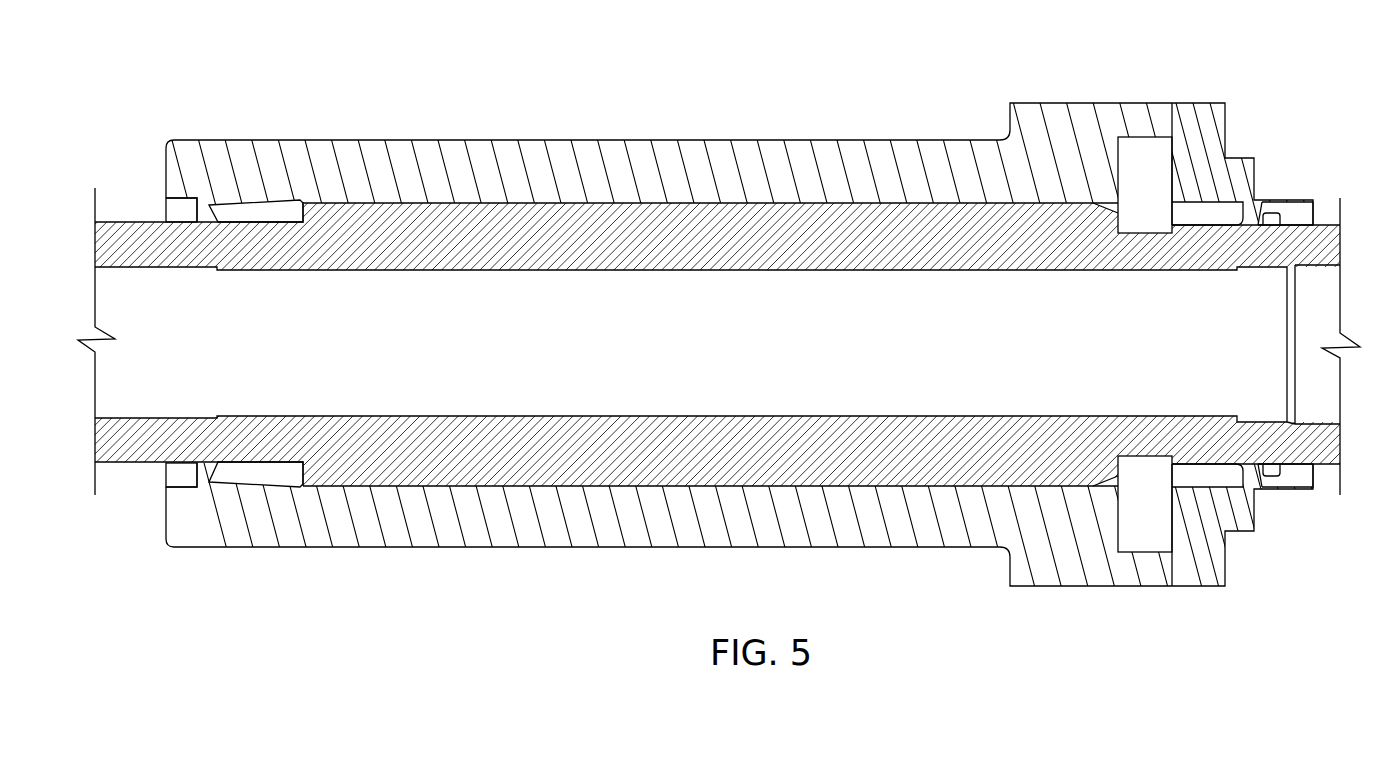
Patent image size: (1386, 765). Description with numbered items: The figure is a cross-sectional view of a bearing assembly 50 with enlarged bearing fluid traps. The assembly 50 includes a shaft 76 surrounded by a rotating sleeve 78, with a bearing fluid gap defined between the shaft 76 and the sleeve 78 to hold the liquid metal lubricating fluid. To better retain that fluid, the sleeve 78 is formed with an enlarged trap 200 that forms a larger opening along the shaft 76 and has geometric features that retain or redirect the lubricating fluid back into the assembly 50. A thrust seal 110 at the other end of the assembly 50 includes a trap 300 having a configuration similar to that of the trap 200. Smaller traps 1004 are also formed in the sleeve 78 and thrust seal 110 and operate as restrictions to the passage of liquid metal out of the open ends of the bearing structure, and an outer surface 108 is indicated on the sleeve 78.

The bearing assembly 50 is at (495, 117).
The shaft 76 is at (835, 217).
The sleeve 78 is at (289, 128).
The outer surface of housing 108 is at (397, 153).
The thrust seal 110 is at (1228, 123).
The trap 200 is at (235, 200).
The trap 300 is at (1200, 200).
The trap 1004 is at (185, 197).